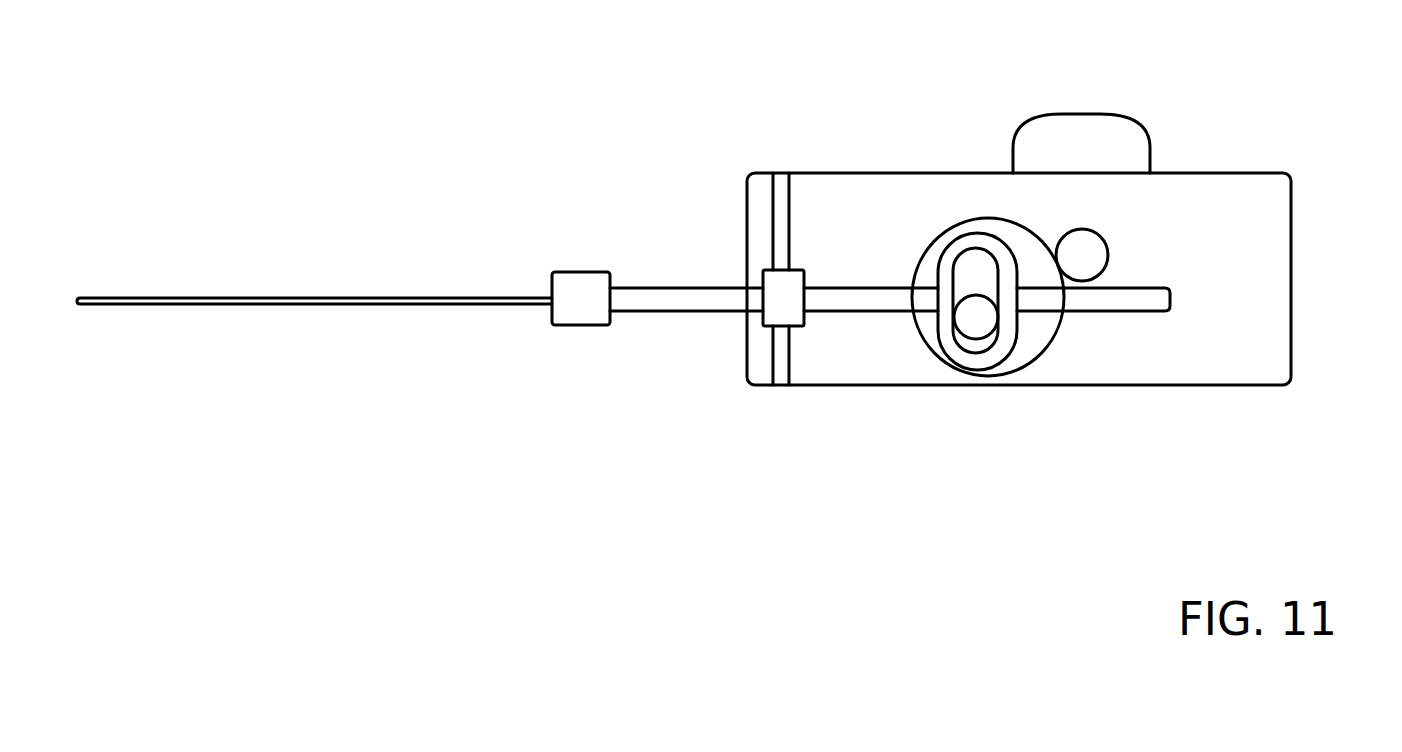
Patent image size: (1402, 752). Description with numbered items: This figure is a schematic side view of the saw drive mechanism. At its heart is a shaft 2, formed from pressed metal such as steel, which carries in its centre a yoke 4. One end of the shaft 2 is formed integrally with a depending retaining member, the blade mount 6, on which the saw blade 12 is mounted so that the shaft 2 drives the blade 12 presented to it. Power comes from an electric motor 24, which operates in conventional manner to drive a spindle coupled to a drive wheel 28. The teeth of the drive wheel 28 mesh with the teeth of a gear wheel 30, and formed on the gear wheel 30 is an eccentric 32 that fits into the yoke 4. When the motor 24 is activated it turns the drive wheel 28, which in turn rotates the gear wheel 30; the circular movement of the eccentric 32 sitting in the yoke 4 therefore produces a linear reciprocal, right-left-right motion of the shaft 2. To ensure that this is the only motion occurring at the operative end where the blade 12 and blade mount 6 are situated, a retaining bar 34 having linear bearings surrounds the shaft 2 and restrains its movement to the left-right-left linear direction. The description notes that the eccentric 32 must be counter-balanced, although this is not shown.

The shaft 2 is at (828, 300).
The yoke 4 is at (948, 252).
The blade mount 6 is at (568, 326).
The saw blade 12 is at (307, 303).
The electric motor 24 is at (1127, 142).
The drive wheel 28 is at (1105, 252).
The gear wheel 30 is at (988, 220).
The eccentric 32 is at (977, 328).
The retaining bar 34 is at (780, 213).